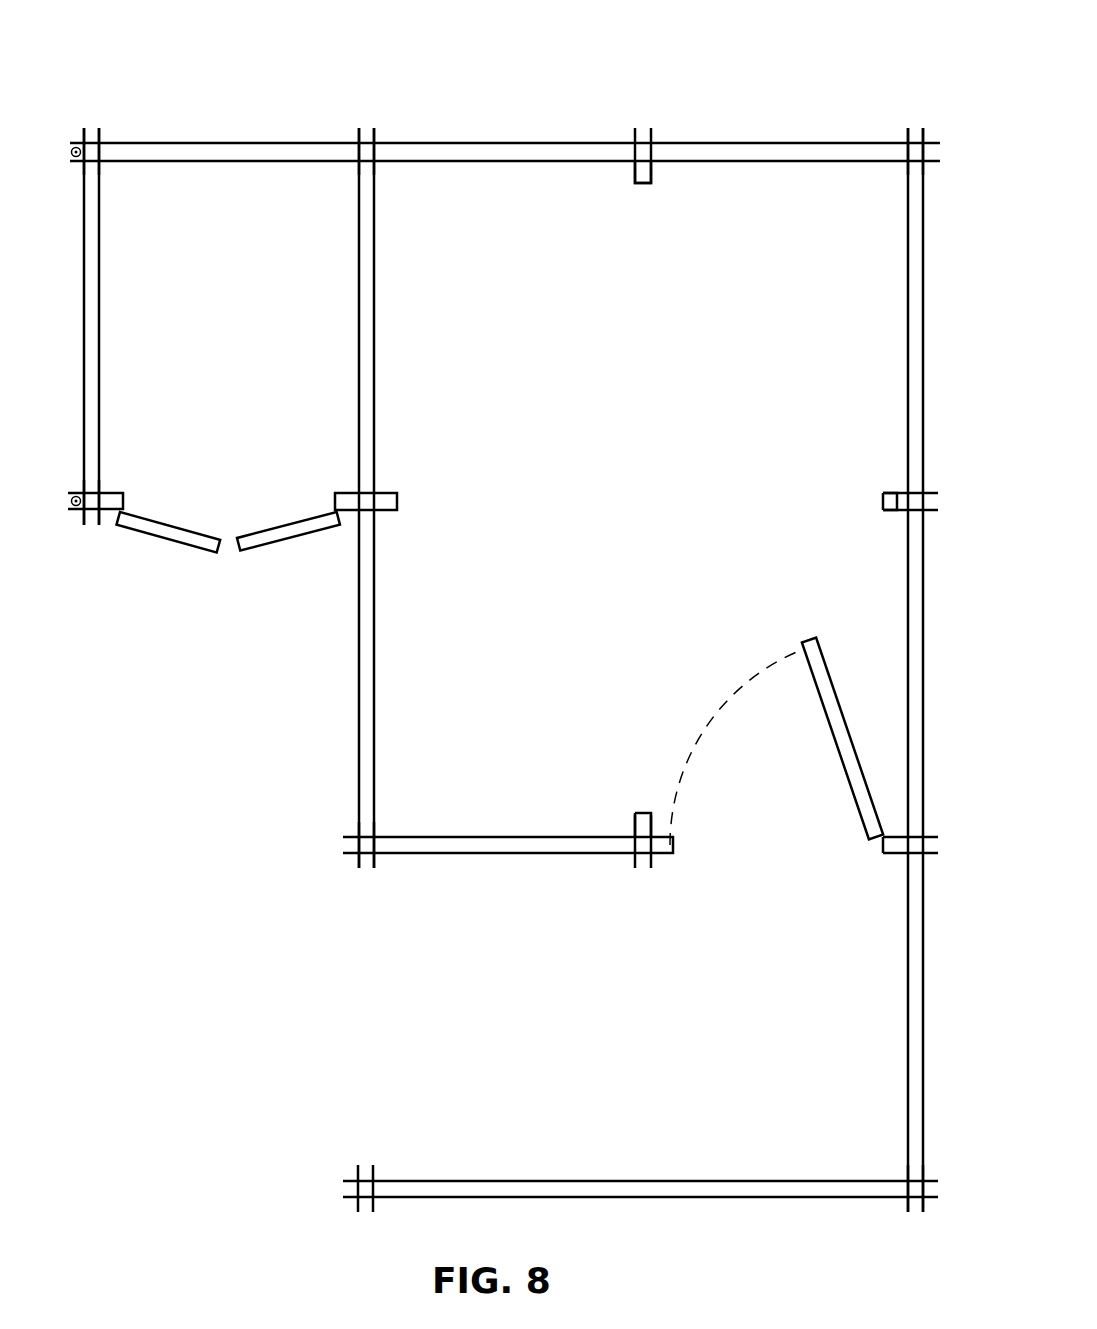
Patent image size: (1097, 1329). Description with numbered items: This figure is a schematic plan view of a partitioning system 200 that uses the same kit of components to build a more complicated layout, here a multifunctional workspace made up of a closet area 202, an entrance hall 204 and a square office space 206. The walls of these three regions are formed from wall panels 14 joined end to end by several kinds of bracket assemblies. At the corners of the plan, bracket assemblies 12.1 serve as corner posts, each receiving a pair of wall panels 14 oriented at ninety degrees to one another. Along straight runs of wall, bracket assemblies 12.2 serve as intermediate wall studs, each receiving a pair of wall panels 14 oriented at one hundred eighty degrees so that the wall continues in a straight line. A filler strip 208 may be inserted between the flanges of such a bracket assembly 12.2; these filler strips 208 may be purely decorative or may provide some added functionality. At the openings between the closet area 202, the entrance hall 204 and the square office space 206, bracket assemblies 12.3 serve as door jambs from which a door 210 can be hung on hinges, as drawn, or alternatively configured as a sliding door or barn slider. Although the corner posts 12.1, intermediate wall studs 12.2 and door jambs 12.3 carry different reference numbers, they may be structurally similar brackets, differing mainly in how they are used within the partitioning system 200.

The partitioning system 200 is at (790, 32).
The wall panel 14 is at (273, 151).
The bracket assembly (corner post) 12.1 is at (97, 153).
The bracket assembly (intermediate wall stud) 12.2 is at (651, 153).
The bracket assembly (door jamb) 12.3 is at (115, 503).
The closet area 202 is at (247, 345).
The entrance hall 204 is at (654, 1032).
The square office space 206 is at (653, 475).
The filler strip 208 is at (643, 185).
The door 210 is at (176, 538).